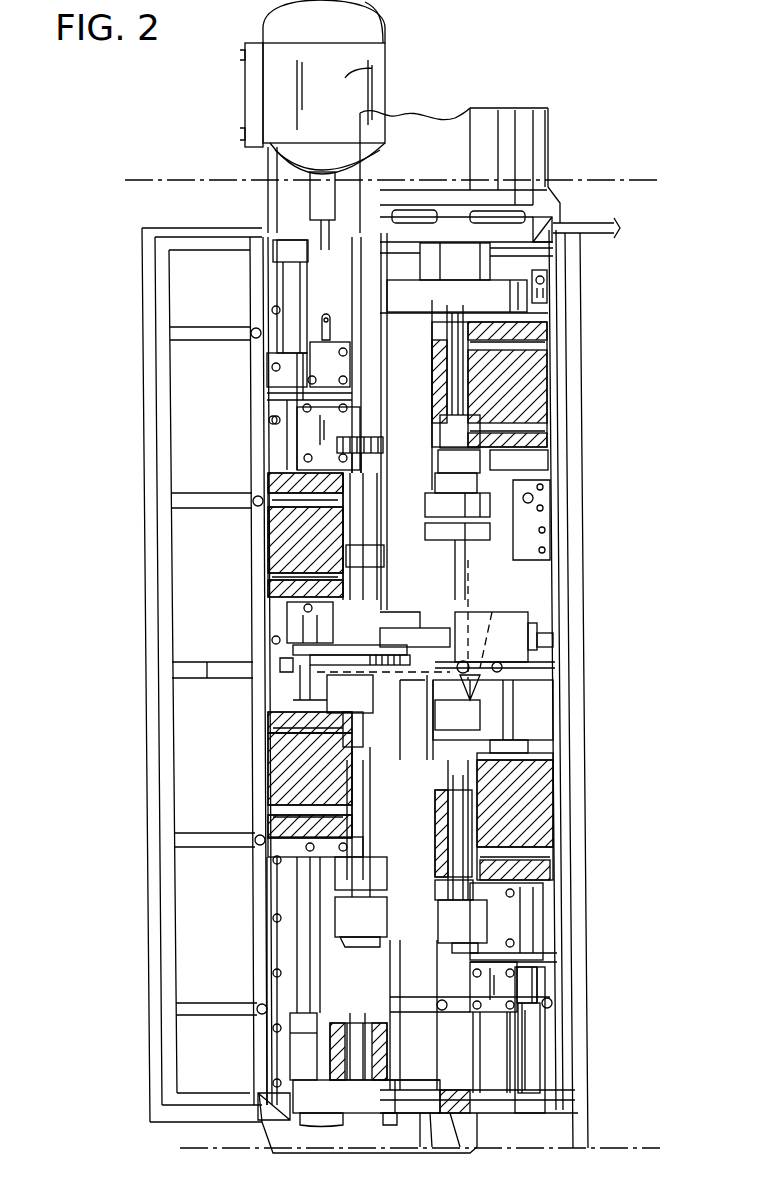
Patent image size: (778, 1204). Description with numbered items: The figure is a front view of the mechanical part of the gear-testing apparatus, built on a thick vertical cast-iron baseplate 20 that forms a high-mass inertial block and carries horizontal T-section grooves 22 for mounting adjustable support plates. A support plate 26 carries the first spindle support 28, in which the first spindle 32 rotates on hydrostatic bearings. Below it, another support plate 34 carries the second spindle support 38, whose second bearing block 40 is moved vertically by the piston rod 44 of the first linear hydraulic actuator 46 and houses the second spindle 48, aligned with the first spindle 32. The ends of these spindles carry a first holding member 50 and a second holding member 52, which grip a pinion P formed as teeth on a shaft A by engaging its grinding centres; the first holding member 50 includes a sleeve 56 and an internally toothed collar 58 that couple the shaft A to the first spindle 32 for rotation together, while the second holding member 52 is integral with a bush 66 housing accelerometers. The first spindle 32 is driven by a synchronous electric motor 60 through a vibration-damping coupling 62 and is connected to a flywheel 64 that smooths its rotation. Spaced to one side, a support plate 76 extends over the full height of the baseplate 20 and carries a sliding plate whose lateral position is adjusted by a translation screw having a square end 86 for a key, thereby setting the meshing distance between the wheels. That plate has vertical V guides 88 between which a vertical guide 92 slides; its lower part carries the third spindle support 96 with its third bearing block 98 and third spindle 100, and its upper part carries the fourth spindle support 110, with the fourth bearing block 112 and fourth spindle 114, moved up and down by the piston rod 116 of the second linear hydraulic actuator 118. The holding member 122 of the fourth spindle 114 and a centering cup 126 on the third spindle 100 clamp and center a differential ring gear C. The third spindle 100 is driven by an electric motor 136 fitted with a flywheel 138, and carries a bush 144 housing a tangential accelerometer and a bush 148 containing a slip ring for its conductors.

The baseplate 20 is at (138, 620).
The T-section grooves 22 is at (200, 327).
The support plate 26 is at (530, 520).
The first spindle support 28 is at (566, 380).
The first spindle 32 is at (455, 397).
The support plate 34 is at (535, 725).
The second spindle support 38 is at (566, 793).
The second bearing block 40 is at (520, 845).
The piston rod 44 is at (530, 925).
The first linear hydraulic actuator 46 is at (530, 1045).
The second spindle 48 is at (465, 830).
The first holding member 50 is at (518, 483).
The second holding member 52 is at (535, 680).
The sleeve 56 is at (492, 512).
The collar 58 is at (560, 595).
The synchronous electric motor 60 is at (505, 135).
The coupling 62 is at (468, 255).
The flywheel 64 is at (512, 305).
The bush 66 is at (490, 710).
The support plate 76 is at (265, 690).
The square end 86 is at (545, 640).
The vertical V guides 88 is at (275, 900).
The vertical guide 92 is at (280, 948).
The third spindle support 96 is at (262, 748).
The third bearing block 98 is at (280, 787).
The third spindle 100 is at (365, 778).
The fourth spindle support 110 is at (250, 477).
The fourth bearing block 112 is at (283, 548).
The fourth spindle 114 is at (370, 525).
The piston rod 116 is at (290, 430).
The second linear hydraulic actuator 118 is at (292, 285).
The holding member 122 is at (408, 625).
The centering cup 126 is at (405, 683).
The electric motor 136 is at (470, 1125).
The flywheel 138 is at (318, 1093).
The bush 144 is at (420, 870).
The bush 148 is at (345, 72).
The shaft A is at (468, 580).
The differential ring gear C is at (280, 662).
The pinion P is at (490, 610).